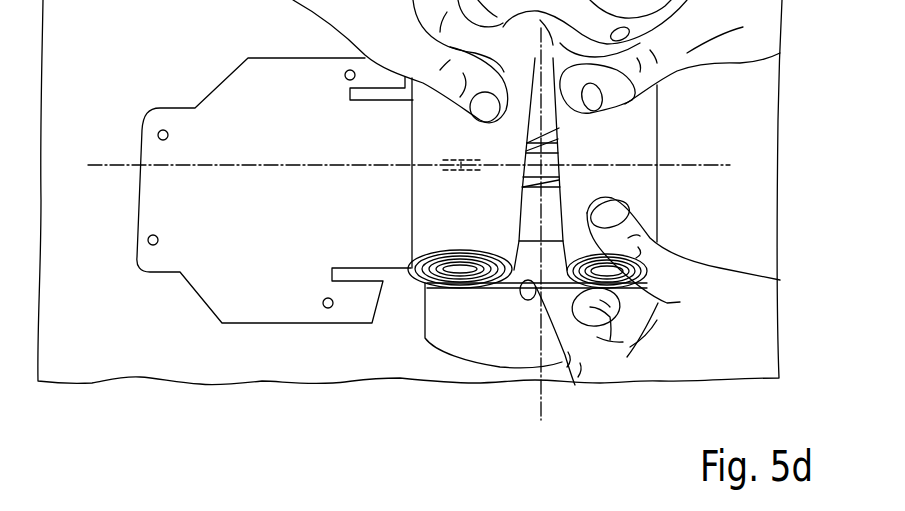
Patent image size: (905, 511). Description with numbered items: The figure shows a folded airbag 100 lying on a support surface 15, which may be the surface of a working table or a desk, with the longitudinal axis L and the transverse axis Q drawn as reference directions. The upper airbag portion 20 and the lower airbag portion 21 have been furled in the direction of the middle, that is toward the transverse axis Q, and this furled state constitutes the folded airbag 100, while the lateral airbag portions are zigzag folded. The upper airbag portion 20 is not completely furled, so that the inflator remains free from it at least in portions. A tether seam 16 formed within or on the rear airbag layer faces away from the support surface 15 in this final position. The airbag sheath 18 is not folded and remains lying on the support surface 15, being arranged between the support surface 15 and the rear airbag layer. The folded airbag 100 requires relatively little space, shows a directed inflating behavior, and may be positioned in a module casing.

The support surface 15 is at (101, 42).
The tether seam 16 is at (460, 172).
The airbag sheath 18 is at (227, 100).
The upper airbag portion 20 is at (437, 233).
The lower airbag portion 21 is at (638, 195).
The folded airbag 100 is at (674, 103).
The longitudinal axis L is at (724, 163).
The transverse axis Q is at (541, 410).